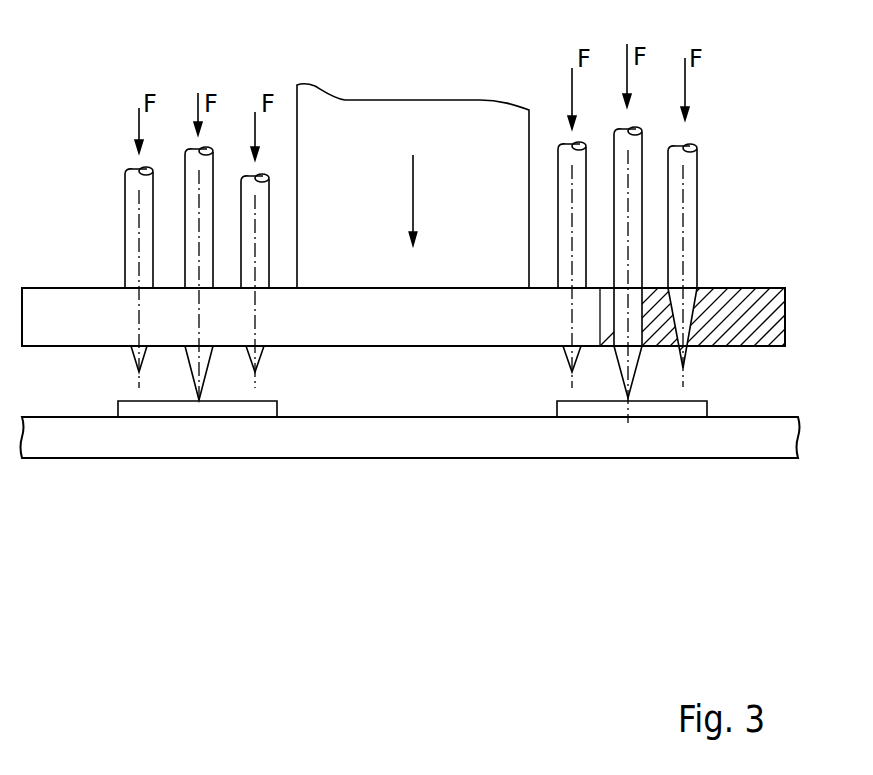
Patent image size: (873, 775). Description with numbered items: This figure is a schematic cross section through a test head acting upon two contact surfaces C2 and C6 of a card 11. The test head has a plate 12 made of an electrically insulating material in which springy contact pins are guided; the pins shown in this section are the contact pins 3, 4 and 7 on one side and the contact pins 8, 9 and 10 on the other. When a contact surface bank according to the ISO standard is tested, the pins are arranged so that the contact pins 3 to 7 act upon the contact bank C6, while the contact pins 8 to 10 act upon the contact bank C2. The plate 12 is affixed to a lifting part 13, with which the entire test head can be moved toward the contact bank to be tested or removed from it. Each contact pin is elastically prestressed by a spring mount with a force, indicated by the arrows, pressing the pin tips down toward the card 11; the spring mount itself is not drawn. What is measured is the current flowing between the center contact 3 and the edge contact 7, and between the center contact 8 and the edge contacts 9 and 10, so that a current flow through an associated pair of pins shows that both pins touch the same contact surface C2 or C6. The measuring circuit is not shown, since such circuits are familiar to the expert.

The contact pin 3 is at (633, 222).
The contact pin 4 is at (690, 185).
The contact pin 7 is at (562, 148).
The contact pin 8 is at (195, 212).
The contact pin 9 is at (136, 179).
The contact pin 10 is at (257, 190).
The card 11 is at (468, 435).
The plate 12 is at (65, 325).
The lifting part 13 is at (414, 200).
The contact surface C2 is at (235, 410).
The contact surface C6 is at (670, 403).